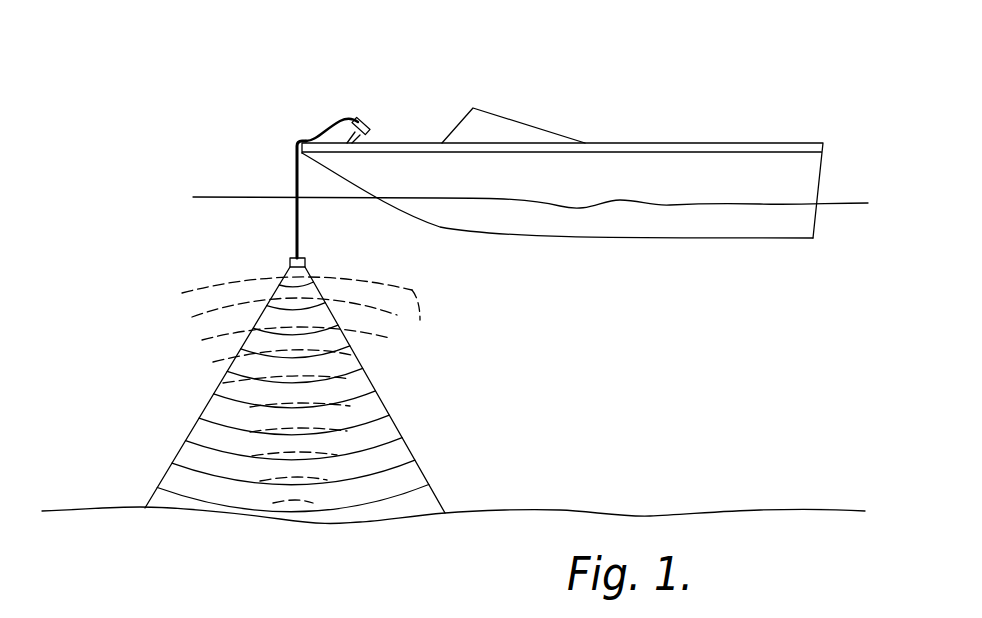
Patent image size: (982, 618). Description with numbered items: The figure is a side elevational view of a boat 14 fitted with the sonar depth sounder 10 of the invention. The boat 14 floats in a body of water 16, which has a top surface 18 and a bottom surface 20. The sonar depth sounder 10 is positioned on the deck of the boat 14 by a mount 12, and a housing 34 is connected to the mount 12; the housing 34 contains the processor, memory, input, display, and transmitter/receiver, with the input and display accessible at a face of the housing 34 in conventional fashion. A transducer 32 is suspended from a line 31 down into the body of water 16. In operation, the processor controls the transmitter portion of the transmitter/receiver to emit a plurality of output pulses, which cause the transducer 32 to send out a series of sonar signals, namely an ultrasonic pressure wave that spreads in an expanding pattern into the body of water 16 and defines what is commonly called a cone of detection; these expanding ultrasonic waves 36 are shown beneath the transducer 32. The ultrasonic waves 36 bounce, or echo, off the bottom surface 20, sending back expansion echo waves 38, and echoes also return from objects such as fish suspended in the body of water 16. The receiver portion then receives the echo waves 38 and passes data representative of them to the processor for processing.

The sonar depth sounder 10 is at (287, 136).
The mount 12 is at (337, 122).
The boat 14 is at (633, 158).
The body of water 16 is at (665, 348).
The top surface 18 is at (837, 208).
The bottom surface 20 is at (675, 513).
The line 31 is at (297, 224).
The transducer 32 is at (303, 258).
The housing 34 is at (367, 122).
The ultrasonic waves 36 is at (397, 445).
The echo waves 38 is at (383, 315).